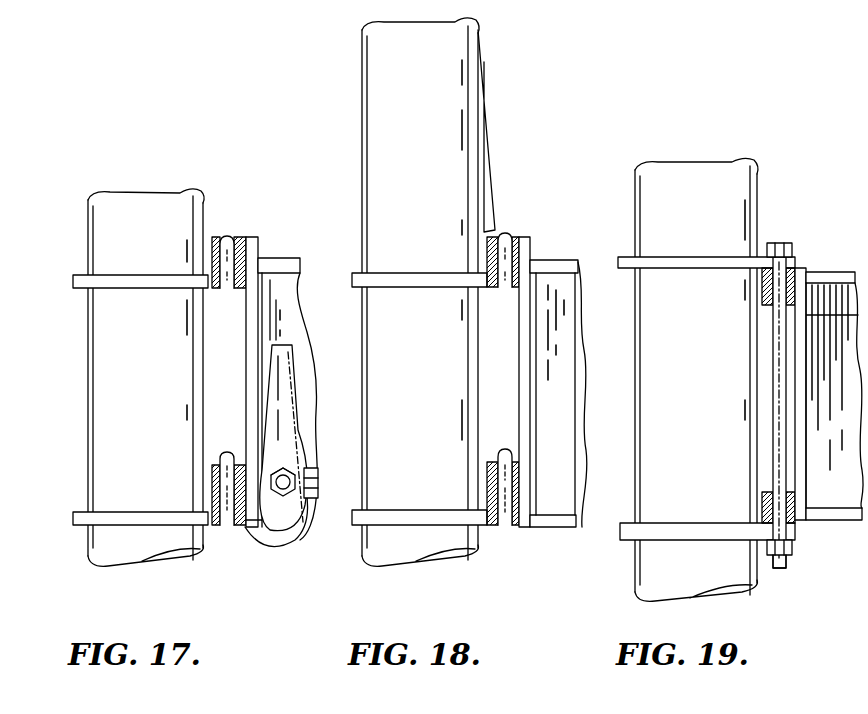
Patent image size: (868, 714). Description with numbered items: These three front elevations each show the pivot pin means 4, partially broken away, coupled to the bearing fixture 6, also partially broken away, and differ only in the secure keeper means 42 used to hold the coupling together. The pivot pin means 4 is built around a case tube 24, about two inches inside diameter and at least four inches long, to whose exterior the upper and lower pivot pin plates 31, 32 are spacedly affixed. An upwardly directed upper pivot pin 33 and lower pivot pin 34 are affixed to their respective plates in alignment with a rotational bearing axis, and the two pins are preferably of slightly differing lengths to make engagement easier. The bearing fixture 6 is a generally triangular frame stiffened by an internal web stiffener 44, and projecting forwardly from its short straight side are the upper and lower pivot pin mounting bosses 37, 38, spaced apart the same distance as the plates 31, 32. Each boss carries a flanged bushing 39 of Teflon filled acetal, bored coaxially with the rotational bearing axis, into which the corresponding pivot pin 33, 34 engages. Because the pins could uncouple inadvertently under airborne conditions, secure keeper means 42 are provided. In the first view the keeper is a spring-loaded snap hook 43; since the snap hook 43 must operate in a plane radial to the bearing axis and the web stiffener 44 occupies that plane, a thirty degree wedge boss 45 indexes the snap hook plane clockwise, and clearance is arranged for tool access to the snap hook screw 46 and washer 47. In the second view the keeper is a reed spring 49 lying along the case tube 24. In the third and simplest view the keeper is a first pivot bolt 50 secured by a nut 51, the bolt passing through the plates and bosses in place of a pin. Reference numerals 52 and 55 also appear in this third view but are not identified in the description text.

In FIG. 17, the pivot pin means 4 is at (60, 402).
In FIG. 18, the pivot pin means 4 is at (355, 341).
In FIG. 19, the pivot pin means 4 is at (628, 358).
In FIG. 17, the bearing fixture 6 is at (284, 268).
In FIG. 18, the bearing fixture 6 is at (552, 268).
In FIG. 19, the bearing fixture 6 is at (820, 274).
In FIG. 17, the case tube 24 is at (92, 207).
In FIG. 18, the case tube 24 is at (366, 148).
In FIG. 19, the case tube 24 is at (640, 183).
In FIG. 17, the upper pivot pin plate 31 is at (75, 281).
In FIG. 18, the upper pivot pin plate 31 is at (354, 281).
In FIG. 19, the upper pivot pin plate 31 is at (630, 271).
In FIG. 17, the lower pivot pin plate 32 is at (73, 518).
In FIG. 18, the lower pivot pin plate 32 is at (353, 523).
In FIG. 19, the lower pivot pin plate 32 is at (622, 536).
In FIG. 17, the upper pivot pin 33 is at (240, 248).
In FIG. 18, the upper pivot pin 33 is at (516, 244).
In FIG. 17, the lower pivot pin 34 is at (232, 528).
In FIG. 18, the lower pivot pin 34 is at (503, 528).
In FIG. 17, the upper pivot pin mounting boss 37 is at (227, 238).
In FIG. 18, the upper pivot pin mounting boss 37 is at (498, 231).
In FIG. 17, the lower pivot pin mounting boss 38 is at (226, 453).
In FIG. 18, the lower pivot pin mounting boss 38 is at (500, 452).
In FIG. 19, the lower pivot pin mounting boss 38 is at (763, 494).
In FIG. 17, the flanged bushing 39 is at (240, 240).
In FIG. 18, the flanged bushing 39 is at (519, 245).
In FIG. 19, the flanged bushing 39 is at (766, 308).
In FIG. 17, the secure keeper means 42 is at (298, 523).
In FIG. 18, the secure keeper means 42 is at (507, 222).
In FIG. 19, the secure keeper means 42 is at (791, 228).
In FIG. 17, the snap hook 43 is at (283, 542).
In FIG. 17, the web stiffener 44 is at (304, 375).
In FIG. 18, the web stiffener 44 is at (570, 420).
In FIG. 19, the web stiffener 44 is at (834, 395).
In FIG. 17, the wedge boss 45 is at (318, 486).
In FIG. 17, the snap hook screw 46 is at (296, 480).
In FIG. 17, the washer 47 is at (290, 470).
In FIG. 18, the reed spring 49 is at (490, 114).
In FIG. 19, the first pivot bolt 50 is at (782, 242).
In FIG. 19, the nut 51 is at (792, 551).
In FIG. 19, the washer 52 is at (867, 190).
In FIG. 19, the spacer 55 is at (856, 223).